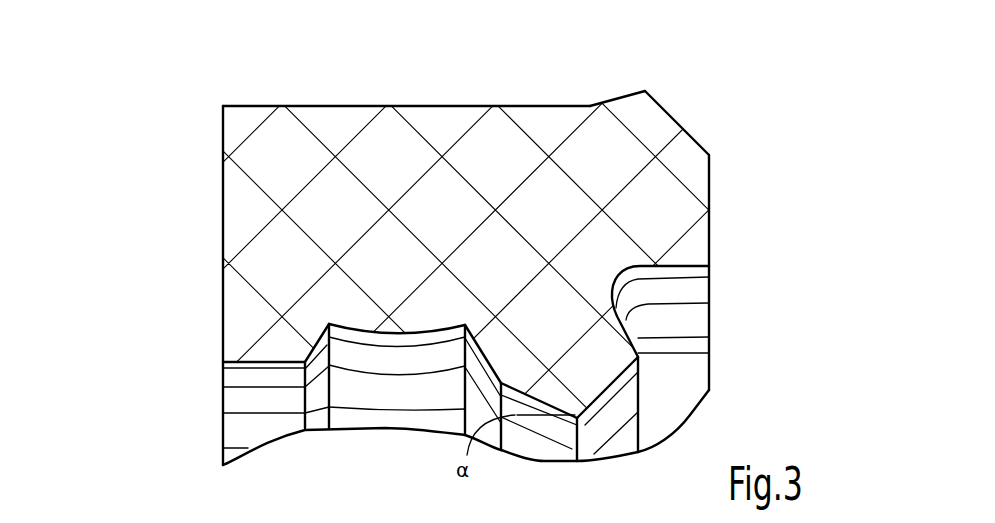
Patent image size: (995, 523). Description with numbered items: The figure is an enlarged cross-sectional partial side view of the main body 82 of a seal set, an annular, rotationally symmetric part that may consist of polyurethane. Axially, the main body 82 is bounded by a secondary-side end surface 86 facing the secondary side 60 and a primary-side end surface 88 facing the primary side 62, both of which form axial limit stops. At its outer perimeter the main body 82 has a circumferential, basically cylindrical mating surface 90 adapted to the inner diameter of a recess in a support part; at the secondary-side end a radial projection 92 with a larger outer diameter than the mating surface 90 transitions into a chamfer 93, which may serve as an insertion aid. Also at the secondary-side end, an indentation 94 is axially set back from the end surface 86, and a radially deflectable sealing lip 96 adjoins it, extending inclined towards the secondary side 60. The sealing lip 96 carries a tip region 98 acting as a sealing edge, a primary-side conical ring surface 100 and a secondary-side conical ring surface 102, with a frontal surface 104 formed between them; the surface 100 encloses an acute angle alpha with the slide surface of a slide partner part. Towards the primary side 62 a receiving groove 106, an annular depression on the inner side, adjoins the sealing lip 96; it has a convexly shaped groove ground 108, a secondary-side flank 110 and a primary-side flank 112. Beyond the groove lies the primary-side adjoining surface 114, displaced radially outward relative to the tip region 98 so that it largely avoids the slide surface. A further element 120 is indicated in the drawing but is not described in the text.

The secondary side 60 is at (782, 193).
The primary side 62 is at (113, 211).
The main body 82 is at (303, 98).
The secondary-side end surface 86 is at (712, 178).
The primary-side end surface 88 is at (223, 237).
The mating surface 90 is at (414, 102).
The radial projection 92 is at (628, 106).
The chamfer 93 is at (692, 114).
The indentation 94 is at (642, 283).
The sealing lip 96 is at (593, 367).
The tip region 98 is at (549, 410).
The primary-side conical ring surface 100 is at (535, 392).
The secondary-side conical ring surface 102 is at (641, 329).
The frontal surface 104 is at (622, 393).
The receiving groove 106 is at (394, 372).
The groove ground 108 is at (390, 341).
The secondary-side boundary surface 110 is at (484, 361).
The primary-side boundary surface 112 is at (323, 328).
The primary-side adjoining surface 114 is at (254, 364).
The bottom edge 120 is at (523, 428).